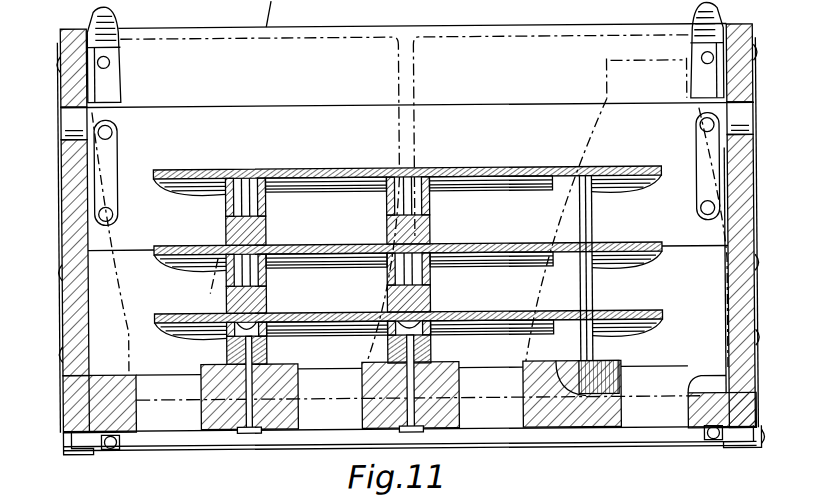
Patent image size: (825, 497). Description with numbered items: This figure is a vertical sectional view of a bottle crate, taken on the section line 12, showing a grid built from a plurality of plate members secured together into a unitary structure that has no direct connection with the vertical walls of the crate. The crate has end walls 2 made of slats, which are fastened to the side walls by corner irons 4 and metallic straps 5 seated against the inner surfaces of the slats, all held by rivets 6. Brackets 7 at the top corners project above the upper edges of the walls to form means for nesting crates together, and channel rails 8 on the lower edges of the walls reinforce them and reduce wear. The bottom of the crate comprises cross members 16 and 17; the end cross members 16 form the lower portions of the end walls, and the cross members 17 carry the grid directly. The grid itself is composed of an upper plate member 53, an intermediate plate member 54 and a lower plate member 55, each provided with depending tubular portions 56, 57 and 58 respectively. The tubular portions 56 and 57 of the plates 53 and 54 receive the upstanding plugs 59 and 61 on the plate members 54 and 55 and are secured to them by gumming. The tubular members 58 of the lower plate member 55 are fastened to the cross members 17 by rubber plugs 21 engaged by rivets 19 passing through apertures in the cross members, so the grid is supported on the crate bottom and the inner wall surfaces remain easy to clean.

The end wall 2 is at (70, 182).
The corner iron 4 is at (760, 380).
The metallic strap 5 is at (112, 165).
The rivet 6 is at (57, 63).
The bracket 7 is at (120, 18).
The channel rail 8 is at (115, 446).
The section line 12 is at (62, 105).
The end cross member 16 is at (121, 452).
The cross member 17 is at (267, 432).
The rivet or bolt 19 is at (246, 405).
The plug 21 is at (227, 356).
The upper plate member 53 is at (512, 165).
The intermediate plate member 54 is at (510, 243).
The lower plate member 55 is at (500, 312).
The tubular portion 56 is at (226, 212).
The tubular portion 57 is at (227, 297).
The tubular member 58 is at (270, 350).
The upstanding plug 59 is at (268, 232).
The upstanding plug 61 is at (268, 300).